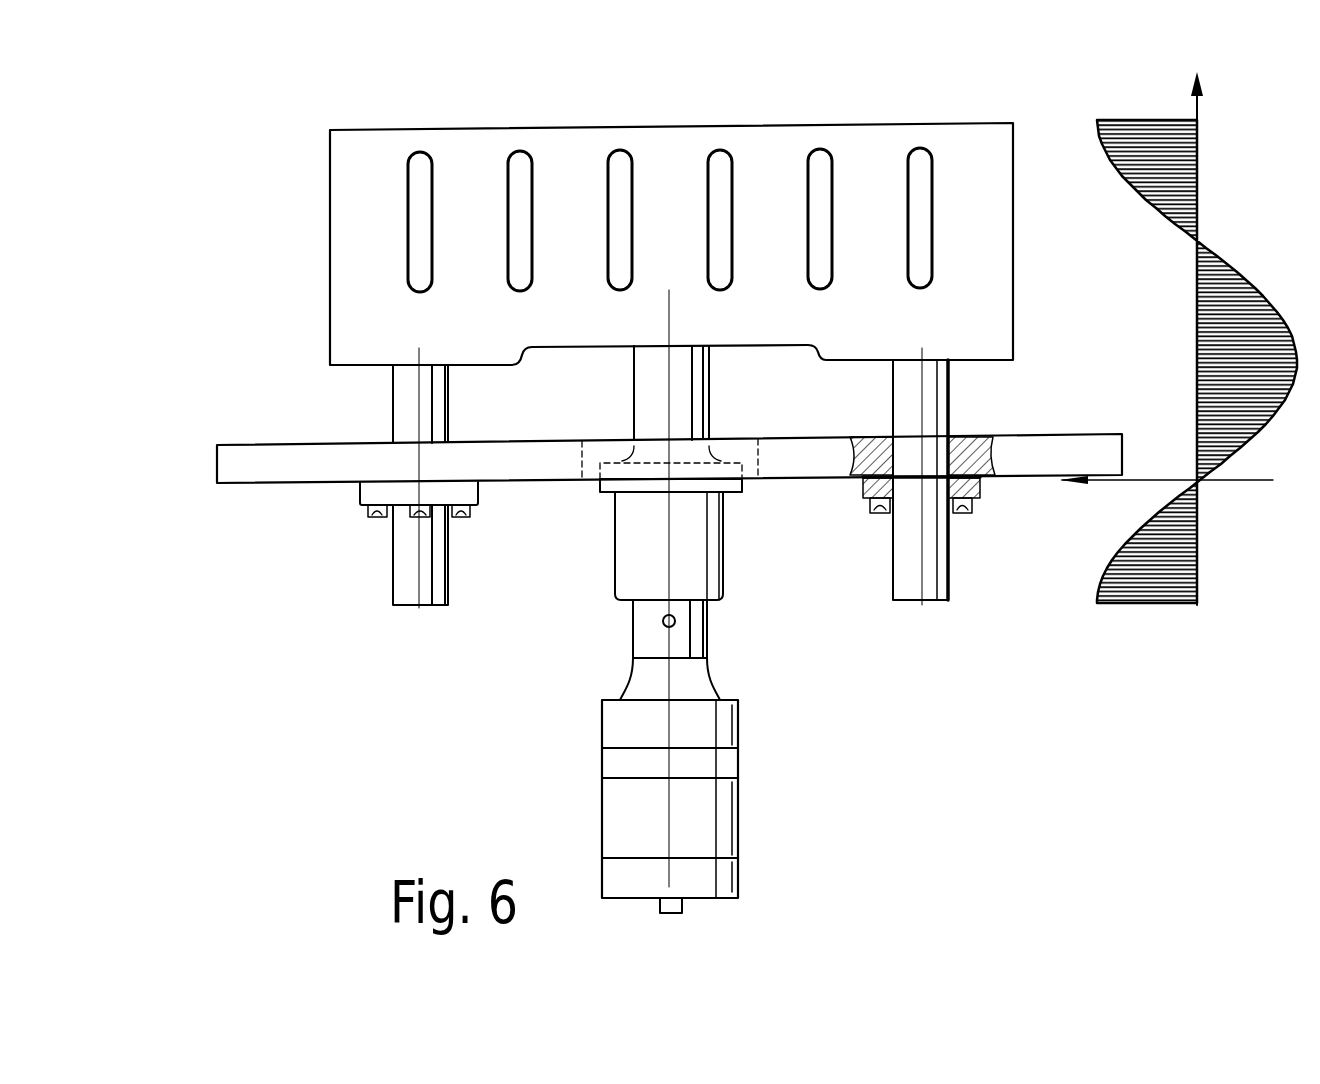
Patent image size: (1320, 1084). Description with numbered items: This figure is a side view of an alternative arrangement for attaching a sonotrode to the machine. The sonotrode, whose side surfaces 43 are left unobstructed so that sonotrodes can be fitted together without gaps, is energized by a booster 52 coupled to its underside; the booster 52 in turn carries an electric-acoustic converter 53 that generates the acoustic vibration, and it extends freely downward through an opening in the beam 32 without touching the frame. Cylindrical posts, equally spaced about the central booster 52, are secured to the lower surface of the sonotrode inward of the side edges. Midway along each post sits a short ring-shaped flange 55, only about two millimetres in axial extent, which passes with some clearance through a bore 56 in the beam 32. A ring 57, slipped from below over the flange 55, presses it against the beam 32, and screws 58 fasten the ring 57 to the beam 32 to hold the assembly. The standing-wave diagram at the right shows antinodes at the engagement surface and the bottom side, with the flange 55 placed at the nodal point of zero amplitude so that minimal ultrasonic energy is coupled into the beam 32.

The beam 32 is at (245, 468).
The side surfaces 43 is at (330, 176).
The booster 52 is at (640, 388).
The electric-acoustic converter 53 is at (700, 825).
The ring-shaped flange 55 is at (927, 472).
The bore 56 is at (892, 455).
The ring 57 is at (865, 497).
The screws 58 is at (958, 510).